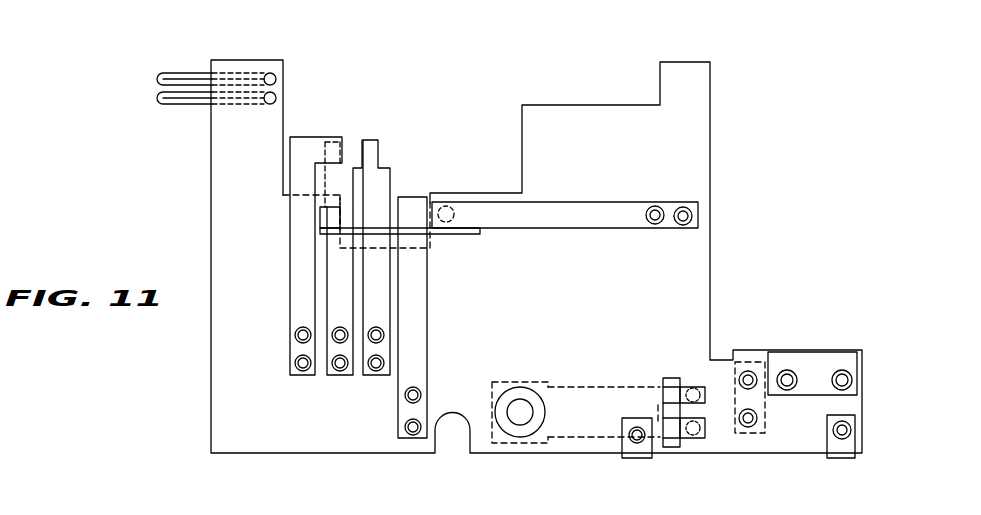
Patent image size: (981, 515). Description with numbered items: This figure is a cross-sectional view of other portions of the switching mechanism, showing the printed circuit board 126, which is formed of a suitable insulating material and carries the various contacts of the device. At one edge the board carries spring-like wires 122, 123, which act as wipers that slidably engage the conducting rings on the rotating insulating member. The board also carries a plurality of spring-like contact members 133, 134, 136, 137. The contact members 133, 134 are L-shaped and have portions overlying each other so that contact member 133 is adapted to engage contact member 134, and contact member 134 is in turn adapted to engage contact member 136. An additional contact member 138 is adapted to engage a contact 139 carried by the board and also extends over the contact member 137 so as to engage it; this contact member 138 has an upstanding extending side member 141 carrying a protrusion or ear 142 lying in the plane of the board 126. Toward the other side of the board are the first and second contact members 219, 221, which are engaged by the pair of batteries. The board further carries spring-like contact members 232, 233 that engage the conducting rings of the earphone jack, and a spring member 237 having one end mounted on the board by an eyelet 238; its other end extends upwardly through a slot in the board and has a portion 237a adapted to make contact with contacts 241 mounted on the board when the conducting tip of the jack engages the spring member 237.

The spring-like wire 122 is at (193, 72).
The spring-like wire 123 is at (185, 105).
The printed circuit board 126 is at (211, 405).
The contact member 133 is at (303, 142).
The contact member 134 is at (350, 147).
The contact member 136 is at (382, 167).
The contact member 137 is at (413, 194).
The contact member 138 is at (567, 212).
The contact 139 is at (448, 205).
The side member 141 is at (446, 236).
The protrusion or ear 142 is at (318, 213).
The first contact member 219 is at (822, 352).
The second contact member 221 is at (747, 358).
The spring-like contact member 232 is at (838, 459).
The spring-like contact member 233 is at (639, 460).
The spring member 237 is at (581, 392).
The portion of spring member 237a is at (705, 398).
The eyelet 238 is at (525, 390).
The contacts 241 is at (693, 390).